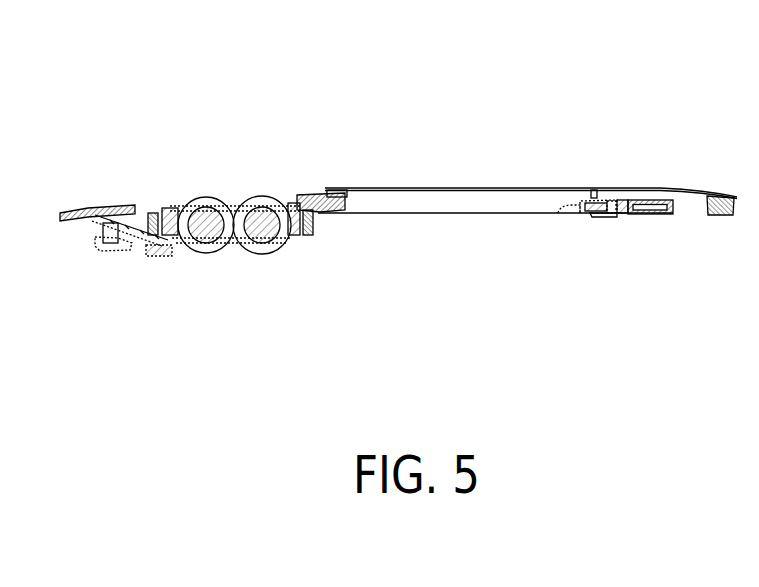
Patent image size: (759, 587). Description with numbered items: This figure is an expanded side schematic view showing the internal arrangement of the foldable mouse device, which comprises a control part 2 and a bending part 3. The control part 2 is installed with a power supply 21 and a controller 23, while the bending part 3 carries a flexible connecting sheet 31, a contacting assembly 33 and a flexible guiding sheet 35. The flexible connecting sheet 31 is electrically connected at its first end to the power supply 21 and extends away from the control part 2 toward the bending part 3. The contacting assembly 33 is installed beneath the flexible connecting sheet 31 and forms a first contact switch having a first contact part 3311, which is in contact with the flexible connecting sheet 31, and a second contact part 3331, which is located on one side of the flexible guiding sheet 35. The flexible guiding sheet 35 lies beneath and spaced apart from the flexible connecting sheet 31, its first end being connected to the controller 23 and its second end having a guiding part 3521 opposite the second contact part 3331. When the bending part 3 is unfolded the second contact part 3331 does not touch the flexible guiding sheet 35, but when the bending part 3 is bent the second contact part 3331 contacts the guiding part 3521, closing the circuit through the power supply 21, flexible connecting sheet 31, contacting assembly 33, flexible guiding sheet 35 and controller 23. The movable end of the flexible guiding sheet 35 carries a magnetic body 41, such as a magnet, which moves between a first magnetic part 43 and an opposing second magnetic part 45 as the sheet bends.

The control part 2 is at (147, 99).
The power supply 21 is at (236, 195).
The controller 23 is at (111, 211).
The bending part 3 is at (432, 91).
The flexible connecting sheet 31 is at (563, 189).
The contacting assembly 33 is at (617, 197).
The first contact part 3311 is at (593, 189).
The second contact part 3331 is at (611, 207).
The flexible guiding sheet 35 is at (520, 213).
The guiding part 3521 is at (566, 214).
The magnetic body 41 is at (664, 215).
The first magnetic part 43 is at (621, 214).
The second magnetic part 45 is at (712, 218).